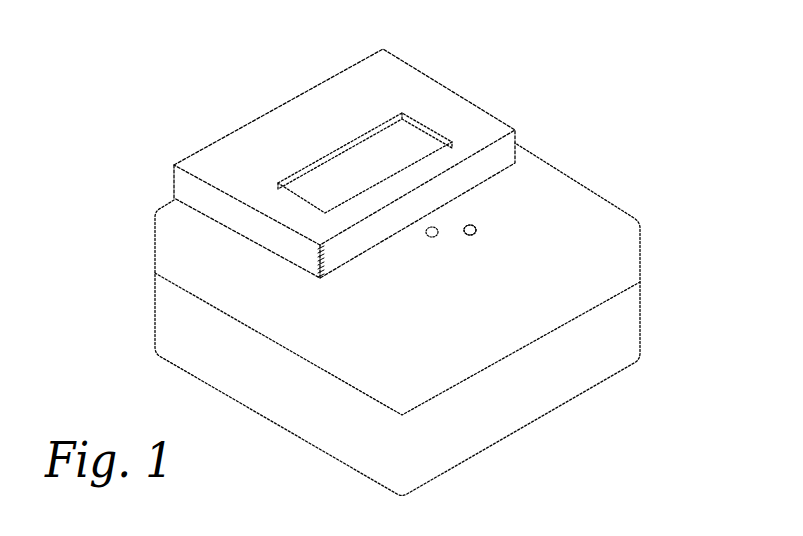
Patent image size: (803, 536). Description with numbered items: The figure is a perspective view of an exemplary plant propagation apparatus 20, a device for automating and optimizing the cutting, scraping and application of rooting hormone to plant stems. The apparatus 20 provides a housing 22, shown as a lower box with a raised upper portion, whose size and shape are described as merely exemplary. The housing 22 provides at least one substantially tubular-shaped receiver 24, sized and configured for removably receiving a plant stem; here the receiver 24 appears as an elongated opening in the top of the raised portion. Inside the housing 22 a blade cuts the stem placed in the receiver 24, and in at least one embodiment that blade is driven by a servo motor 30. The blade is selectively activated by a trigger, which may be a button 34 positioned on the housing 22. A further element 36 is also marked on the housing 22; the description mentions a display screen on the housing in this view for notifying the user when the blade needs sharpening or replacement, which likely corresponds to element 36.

The plant propagation apparatus 20 is at (207, 84).
The housing 22 is at (192, 267).
The substantially tubular-shaped receiver 24 is at (428, 212).
The servo motor 30 is at (462, 254).
The button 34 is at (475, 225).
The slot 36 is at (417, 145).